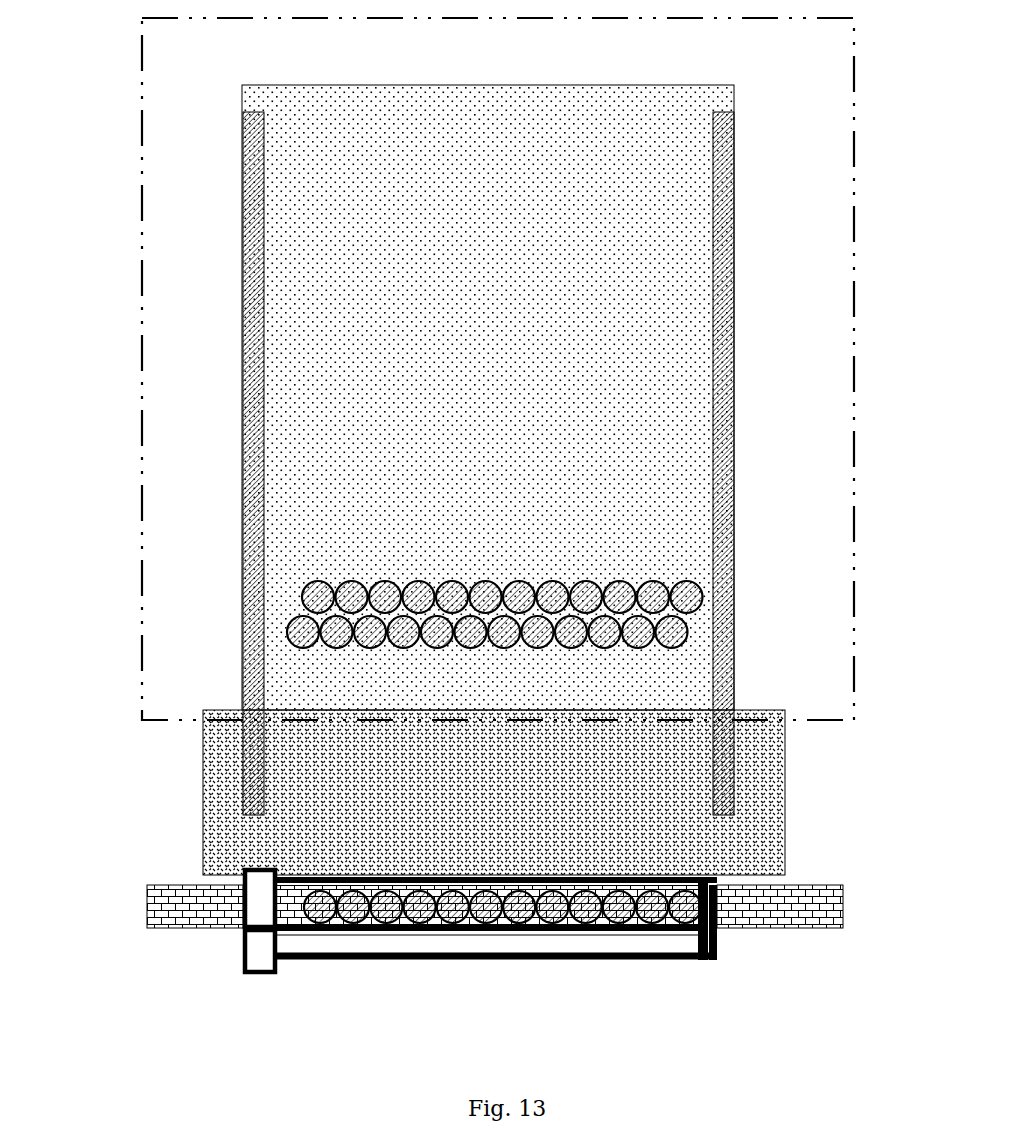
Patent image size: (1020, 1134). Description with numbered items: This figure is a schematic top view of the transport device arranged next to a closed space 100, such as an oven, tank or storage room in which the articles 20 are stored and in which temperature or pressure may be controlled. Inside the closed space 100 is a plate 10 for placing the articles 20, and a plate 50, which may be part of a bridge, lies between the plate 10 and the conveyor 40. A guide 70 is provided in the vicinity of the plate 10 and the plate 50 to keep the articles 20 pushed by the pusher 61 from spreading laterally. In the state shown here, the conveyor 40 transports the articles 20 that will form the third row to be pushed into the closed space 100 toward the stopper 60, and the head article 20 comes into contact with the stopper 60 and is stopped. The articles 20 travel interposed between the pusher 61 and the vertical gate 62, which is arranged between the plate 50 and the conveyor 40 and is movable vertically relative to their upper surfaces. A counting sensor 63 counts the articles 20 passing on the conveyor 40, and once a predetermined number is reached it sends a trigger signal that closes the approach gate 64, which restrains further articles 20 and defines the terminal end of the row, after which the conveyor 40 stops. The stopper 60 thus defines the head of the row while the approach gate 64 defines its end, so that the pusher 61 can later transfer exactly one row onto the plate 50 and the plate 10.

The closed space 100 is at (133, 252).
The plate 10 is at (262, 106).
The articles 20 is at (290, 633).
The guide 70 is at (735, 617).
The plate 50 is at (767, 811).
The conveyor 40 is at (146, 907).
The vertical gate 62 is at (843, 913).
The pusher 61 is at (471, 960).
The stopper 60 is at (718, 946).
The counting sensor 63 is at (243, 972).
The approach gate 64 is at (213, 884).